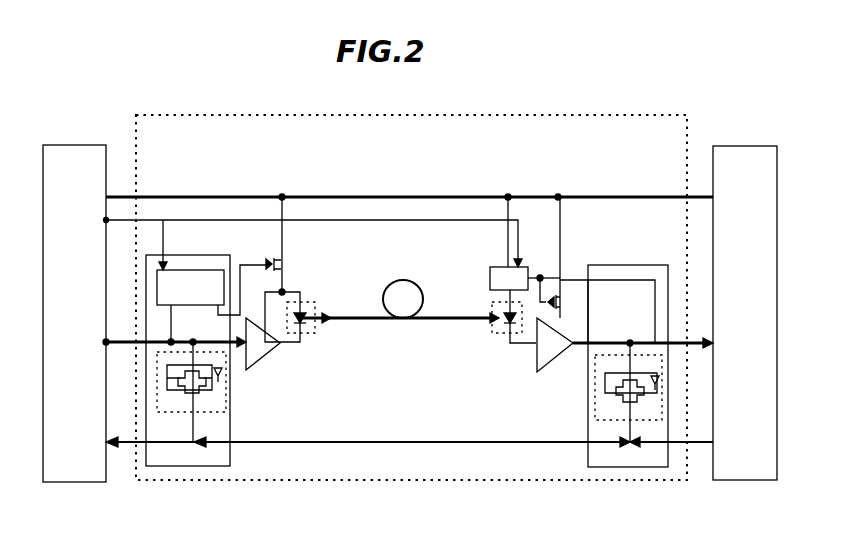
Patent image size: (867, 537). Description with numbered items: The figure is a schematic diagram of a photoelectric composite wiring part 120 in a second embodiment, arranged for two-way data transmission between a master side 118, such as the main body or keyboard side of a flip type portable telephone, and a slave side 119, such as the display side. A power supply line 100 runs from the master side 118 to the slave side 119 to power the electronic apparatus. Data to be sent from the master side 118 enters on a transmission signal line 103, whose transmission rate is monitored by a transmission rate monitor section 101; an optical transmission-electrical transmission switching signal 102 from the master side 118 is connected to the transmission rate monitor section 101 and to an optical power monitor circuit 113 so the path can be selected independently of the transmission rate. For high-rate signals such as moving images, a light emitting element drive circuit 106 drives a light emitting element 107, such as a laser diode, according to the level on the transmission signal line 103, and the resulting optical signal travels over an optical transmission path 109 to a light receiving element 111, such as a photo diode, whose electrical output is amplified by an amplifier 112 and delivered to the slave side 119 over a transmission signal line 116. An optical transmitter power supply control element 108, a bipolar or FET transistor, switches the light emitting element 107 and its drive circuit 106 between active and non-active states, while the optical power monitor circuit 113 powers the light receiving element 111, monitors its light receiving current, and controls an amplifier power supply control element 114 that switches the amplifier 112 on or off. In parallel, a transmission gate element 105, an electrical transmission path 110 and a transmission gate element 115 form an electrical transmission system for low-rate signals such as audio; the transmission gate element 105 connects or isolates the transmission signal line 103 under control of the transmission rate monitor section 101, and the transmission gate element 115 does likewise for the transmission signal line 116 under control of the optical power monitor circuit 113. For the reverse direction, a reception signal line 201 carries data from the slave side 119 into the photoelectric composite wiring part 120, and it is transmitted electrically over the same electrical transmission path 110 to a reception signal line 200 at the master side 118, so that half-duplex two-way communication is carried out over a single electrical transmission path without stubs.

The power supply line 100 is at (166, 192).
The transmission rate monitor section 101 is at (178, 267).
The optical transmission-electrical transmission switching signal 102 is at (104, 222).
The transmission signal line 103 is at (106, 336).
The transmission gate element 105 is at (234, 392).
The light emitting element drive circuit 106 is at (272, 357).
The light emitting element 107 is at (312, 301).
The optical transmitter power supply control element 108 is at (288, 254).
The optical transmission path 109 is at (402, 280).
The electrical transmission path 110 is at (402, 432).
The light receiving element 111 is at (494, 341).
The amplifier 112 is at (528, 360).
The optical power monitor circuit 113 is at (490, 266).
The amplifier power supply control element 114 is at (576, 276).
The transmission gate element 115 is at (592, 394).
The transmission signal line 116 is at (706, 337).
The master side 118 is at (72, 144).
The slave side 119 is at (738, 144).
The photoelectric composite wiring part 120 is at (156, 116).
The reception signal line 200 is at (108, 437).
The reception signal line 201 is at (712, 437).